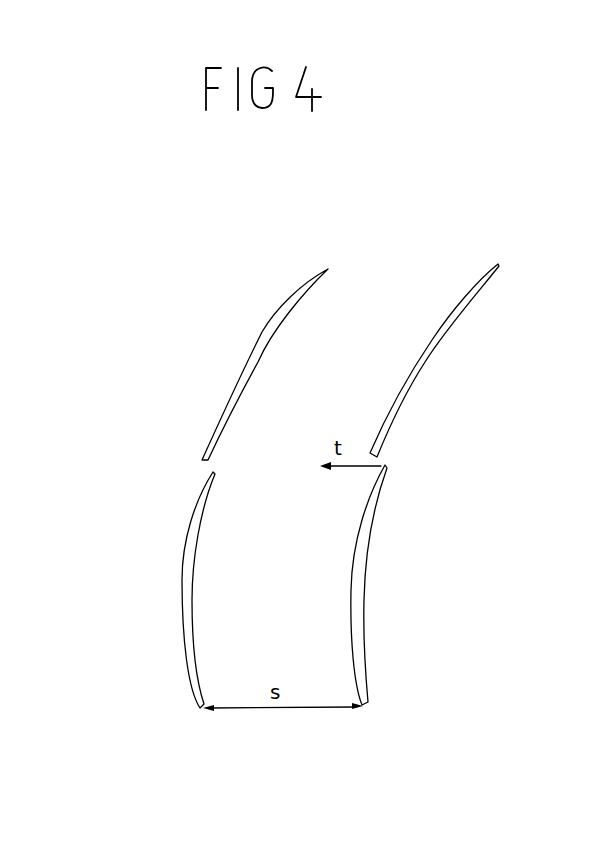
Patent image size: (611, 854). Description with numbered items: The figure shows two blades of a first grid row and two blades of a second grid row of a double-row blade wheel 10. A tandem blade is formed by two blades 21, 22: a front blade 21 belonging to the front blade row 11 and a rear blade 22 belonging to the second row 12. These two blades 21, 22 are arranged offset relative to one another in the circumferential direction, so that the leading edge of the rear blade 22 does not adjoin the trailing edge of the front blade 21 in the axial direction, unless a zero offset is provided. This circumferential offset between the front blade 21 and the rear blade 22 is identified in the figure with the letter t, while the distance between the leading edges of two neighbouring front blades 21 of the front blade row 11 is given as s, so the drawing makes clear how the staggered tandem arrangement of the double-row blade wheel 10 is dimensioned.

The blade arrangement 10 is at (597, 499).
The front blade row 11 is at (158, 610).
The second blade (upper left blade) 12 is at (238, 318).
The front blade 21 is at (368, 592).
The rear blade 22 is at (440, 345).